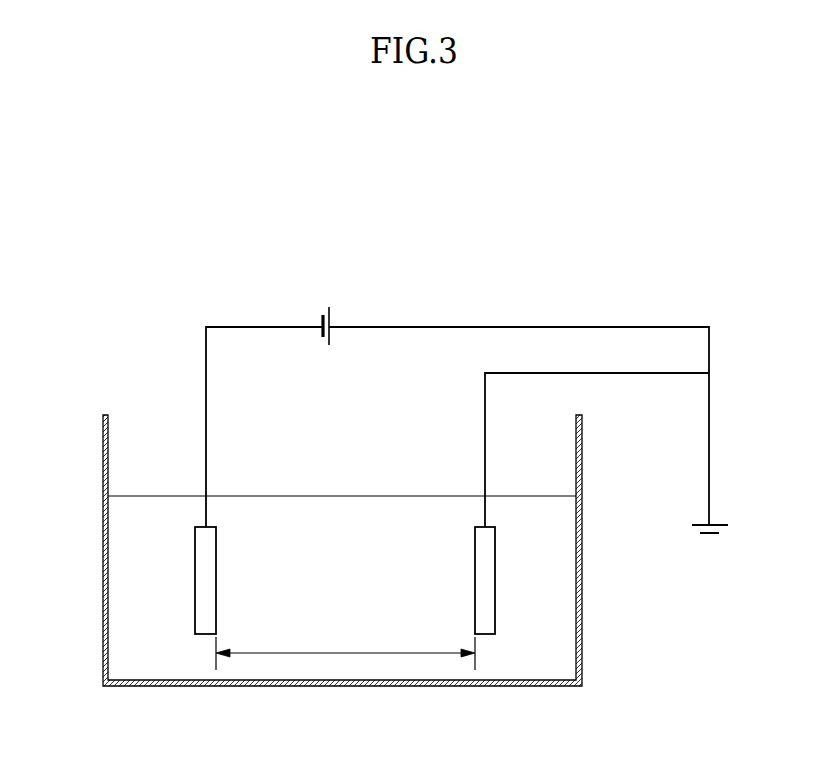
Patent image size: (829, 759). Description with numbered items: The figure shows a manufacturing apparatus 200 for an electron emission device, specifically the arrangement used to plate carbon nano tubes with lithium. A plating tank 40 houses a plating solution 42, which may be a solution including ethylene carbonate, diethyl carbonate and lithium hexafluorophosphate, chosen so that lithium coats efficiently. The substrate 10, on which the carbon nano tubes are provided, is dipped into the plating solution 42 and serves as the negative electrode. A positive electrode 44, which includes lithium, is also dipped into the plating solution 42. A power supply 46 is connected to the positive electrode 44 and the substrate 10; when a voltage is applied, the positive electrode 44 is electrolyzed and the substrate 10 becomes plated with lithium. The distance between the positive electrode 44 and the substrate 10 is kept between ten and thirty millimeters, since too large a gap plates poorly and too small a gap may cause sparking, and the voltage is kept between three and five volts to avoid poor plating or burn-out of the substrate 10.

The manufacturing apparatus 200 is at (433, 247).
The substrate 10 is at (195, 580).
The plating tank 40 is at (582, 455).
The plating solution 42 is at (555, 573).
The positive electrode 44 is at (495, 604).
The power supply 46 is at (330, 318).